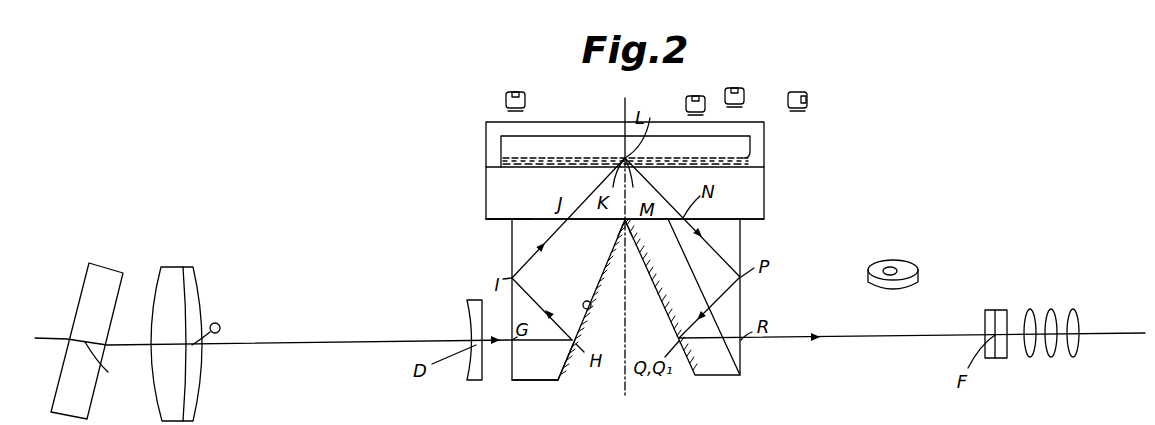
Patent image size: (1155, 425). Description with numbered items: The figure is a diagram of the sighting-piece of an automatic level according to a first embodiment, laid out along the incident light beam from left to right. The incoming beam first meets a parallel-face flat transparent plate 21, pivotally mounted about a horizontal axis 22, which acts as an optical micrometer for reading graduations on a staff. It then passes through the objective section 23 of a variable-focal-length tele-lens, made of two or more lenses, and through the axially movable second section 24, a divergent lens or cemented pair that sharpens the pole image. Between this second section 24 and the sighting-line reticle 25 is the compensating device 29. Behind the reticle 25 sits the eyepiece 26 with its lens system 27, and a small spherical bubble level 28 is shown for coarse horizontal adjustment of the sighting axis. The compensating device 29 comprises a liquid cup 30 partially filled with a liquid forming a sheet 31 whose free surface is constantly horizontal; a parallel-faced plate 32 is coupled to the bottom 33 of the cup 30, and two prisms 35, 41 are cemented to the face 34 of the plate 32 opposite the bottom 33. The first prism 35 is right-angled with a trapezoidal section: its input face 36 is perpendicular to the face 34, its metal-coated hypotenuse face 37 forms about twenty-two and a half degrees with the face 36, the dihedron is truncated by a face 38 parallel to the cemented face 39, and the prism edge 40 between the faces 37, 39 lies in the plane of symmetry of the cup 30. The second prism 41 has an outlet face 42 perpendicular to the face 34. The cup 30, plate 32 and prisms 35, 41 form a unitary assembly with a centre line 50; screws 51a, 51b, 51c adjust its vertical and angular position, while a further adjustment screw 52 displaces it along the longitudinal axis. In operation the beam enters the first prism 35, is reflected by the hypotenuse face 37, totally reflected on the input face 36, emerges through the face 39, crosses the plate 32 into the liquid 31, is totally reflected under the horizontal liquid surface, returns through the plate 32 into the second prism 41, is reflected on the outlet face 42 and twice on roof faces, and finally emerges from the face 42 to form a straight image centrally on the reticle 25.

The parallel-face flat transparent plate 21 is at (102, 279).
The horizontal axis 22 is at (111, 368).
The objective section 23 is at (170, 283).
The second section 24 is at (473, 381).
The sighting-line reticle 25 is at (1001, 315).
The eyepiece 26 is at (1055, 344).
The lens system 27 is at (1031, 358).
The spherical bubble level 28 is at (905, 270).
The compensating device 29 is at (772, 190).
The liquid cup 30 is at (752, 156).
The liquid sheet 31 is at (500, 160).
The parallel-faced plate 32 is at (500, 185).
The bottom 33 is at (737, 167).
The face 34 is at (486, 219).
The first prism 35 is at (538, 367).
The prism face 36 is at (510, 262).
The metal-coated hypotenuse face 37 is at (593, 300).
The face 38 is at (517, 381).
The face 39 is at (523, 220).
The prism edge 40 is at (625, 221).
The second prism 41 is at (728, 231).
The outlet face 42 is at (741, 301).
The centre line 50 is at (625, 105).
The screw 51a is at (531, 90).
The screw 51b is at (687, 99).
The screw 51c is at (733, 87).
The adjustment screw 52 is at (799, 91).